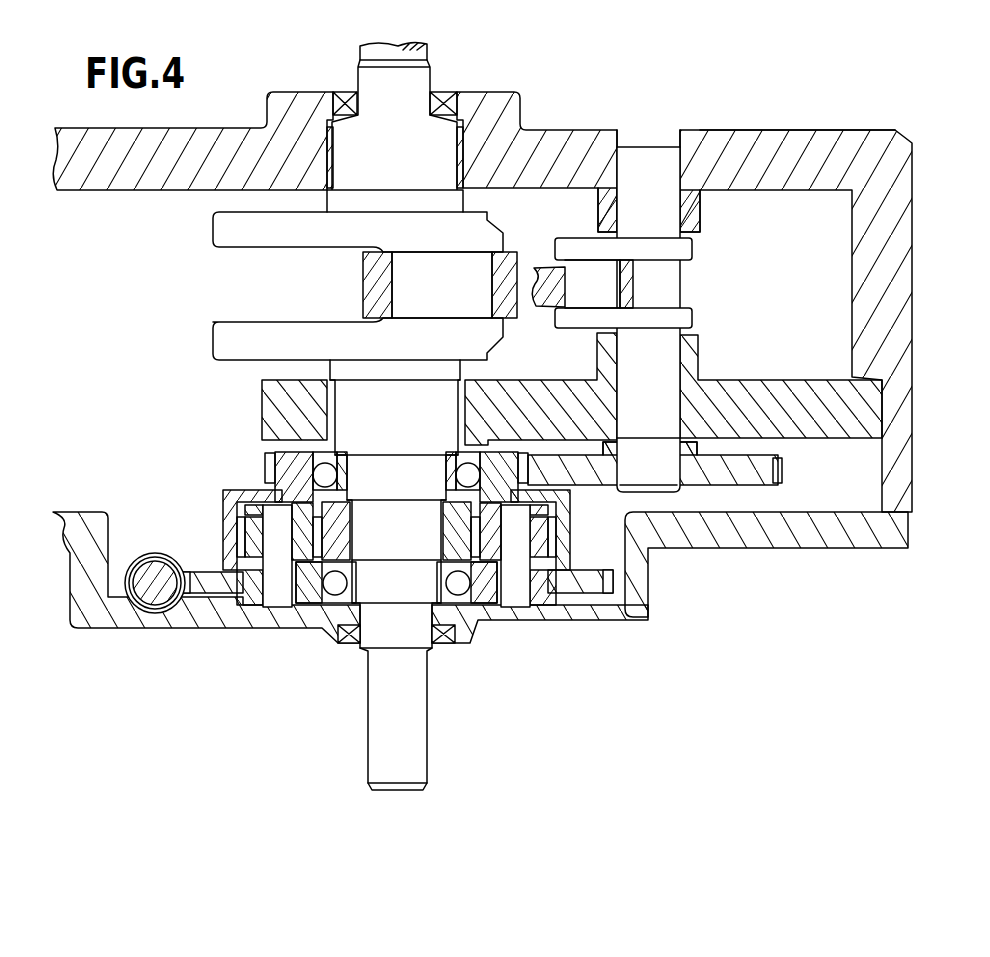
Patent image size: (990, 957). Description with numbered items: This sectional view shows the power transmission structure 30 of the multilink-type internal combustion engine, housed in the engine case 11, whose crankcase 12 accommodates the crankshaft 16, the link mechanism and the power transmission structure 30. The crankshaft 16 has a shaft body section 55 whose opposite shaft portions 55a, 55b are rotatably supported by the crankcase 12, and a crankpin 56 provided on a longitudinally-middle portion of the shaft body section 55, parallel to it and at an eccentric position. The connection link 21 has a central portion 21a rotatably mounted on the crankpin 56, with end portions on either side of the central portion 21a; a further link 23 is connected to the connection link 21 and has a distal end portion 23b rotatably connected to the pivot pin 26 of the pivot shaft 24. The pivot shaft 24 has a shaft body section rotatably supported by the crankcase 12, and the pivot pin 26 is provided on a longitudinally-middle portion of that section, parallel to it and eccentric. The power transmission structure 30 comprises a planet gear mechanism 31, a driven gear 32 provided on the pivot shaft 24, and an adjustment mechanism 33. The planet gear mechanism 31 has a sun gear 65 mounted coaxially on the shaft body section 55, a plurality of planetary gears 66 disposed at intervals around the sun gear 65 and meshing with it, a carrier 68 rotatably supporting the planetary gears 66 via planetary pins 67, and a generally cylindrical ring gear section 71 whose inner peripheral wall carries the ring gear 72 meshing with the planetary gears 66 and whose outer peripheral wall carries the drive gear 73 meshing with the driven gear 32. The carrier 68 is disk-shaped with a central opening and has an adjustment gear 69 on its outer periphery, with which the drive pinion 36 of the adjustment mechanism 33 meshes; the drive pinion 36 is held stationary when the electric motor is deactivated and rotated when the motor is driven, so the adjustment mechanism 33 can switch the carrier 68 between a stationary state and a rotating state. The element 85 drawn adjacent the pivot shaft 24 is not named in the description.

The engine case 11 is at (780, 118).
The crankcase 12 is at (712, 130).
The crankshaft 16 is at (463, 140).
The connection link 21 is at (363, 292).
The central portion 21a is at (392, 285).
The connecting rod 23 is at (540, 268).
The distal end portion 23b is at (633, 285).
The pivot shaft 24 is at (683, 218).
The pivot pin 26 is at (588, 290).
The power transmission structure 30 is at (198, 474).
The planet gear mechanism 31 is at (599, 535).
The driven gear 32 is at (785, 470).
The adjustment mechanism 33 is at (147, 538).
The drive pinion 36 is at (107, 600).
The shaft body section 55 is at (395, 512).
The upper bearing 55a is at (330, 150).
The lower bearing 55b is at (345, 413).
The crankpin 56 is at (455, 318).
The sun gear 65 is at (297, 605).
The planetary gears 66 is at (243, 572).
The planetary pins 67 is at (270, 600).
The carrier 68 is at (497, 605).
The adjustment gear 69 is at (185, 605).
The ring gear section 71 is at (592, 565).
The ring gear 72 is at (225, 520).
The drive gear 73 is at (512, 453).
The support boss 85 is at (650, 455).